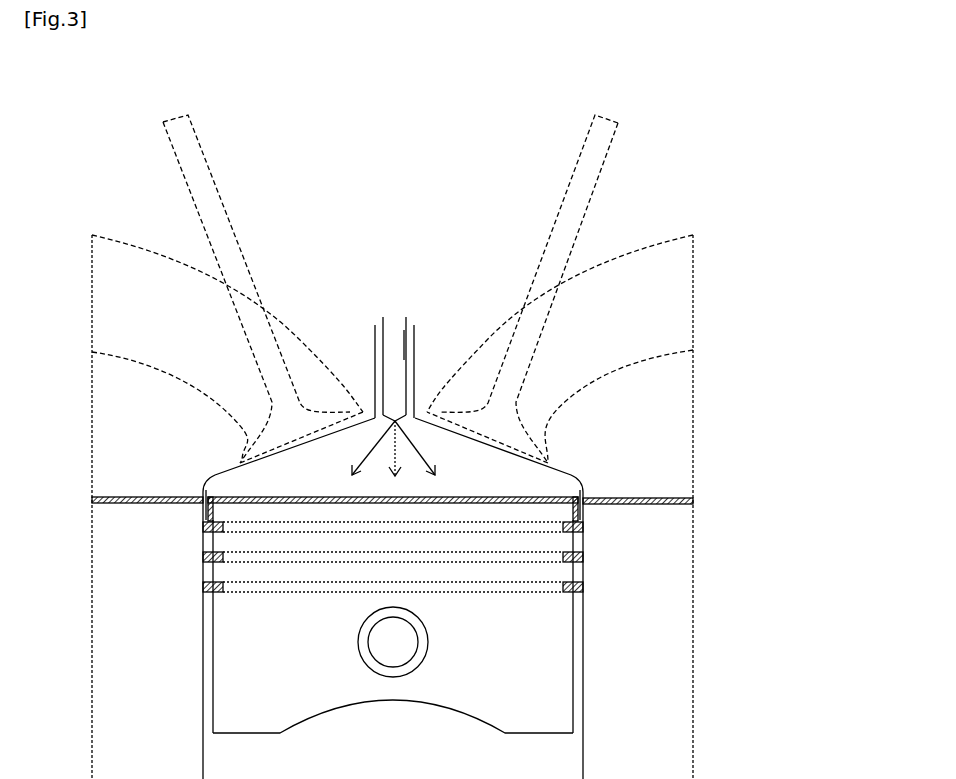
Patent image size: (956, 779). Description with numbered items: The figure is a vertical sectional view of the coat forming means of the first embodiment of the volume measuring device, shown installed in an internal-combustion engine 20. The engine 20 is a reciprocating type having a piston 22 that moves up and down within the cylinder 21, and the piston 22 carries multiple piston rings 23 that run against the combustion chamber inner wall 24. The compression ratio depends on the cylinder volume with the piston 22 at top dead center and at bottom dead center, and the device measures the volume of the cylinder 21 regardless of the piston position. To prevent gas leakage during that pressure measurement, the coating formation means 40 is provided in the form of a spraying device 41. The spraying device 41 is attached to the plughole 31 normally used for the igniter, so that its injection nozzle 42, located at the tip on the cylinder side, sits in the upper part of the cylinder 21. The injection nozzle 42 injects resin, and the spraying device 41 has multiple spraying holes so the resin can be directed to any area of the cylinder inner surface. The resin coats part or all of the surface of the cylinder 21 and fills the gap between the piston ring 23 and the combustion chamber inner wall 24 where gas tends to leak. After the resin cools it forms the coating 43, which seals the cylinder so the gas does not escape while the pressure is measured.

The internal-combustion engine 20 is at (779, 211).
The cylinder 21 is at (565, 473).
The piston 22 is at (533, 714).
The piston ring 23 is at (203, 526).
The combustion chamber inner wall 24 is at (583, 642).
The plughole 31 is at (380, 318).
The coating formation means 40 is at (415, 294).
The spraying device 41 is at (404, 357).
The injection nozzle 42 is at (408, 425).
The coating 43 is at (215, 482).